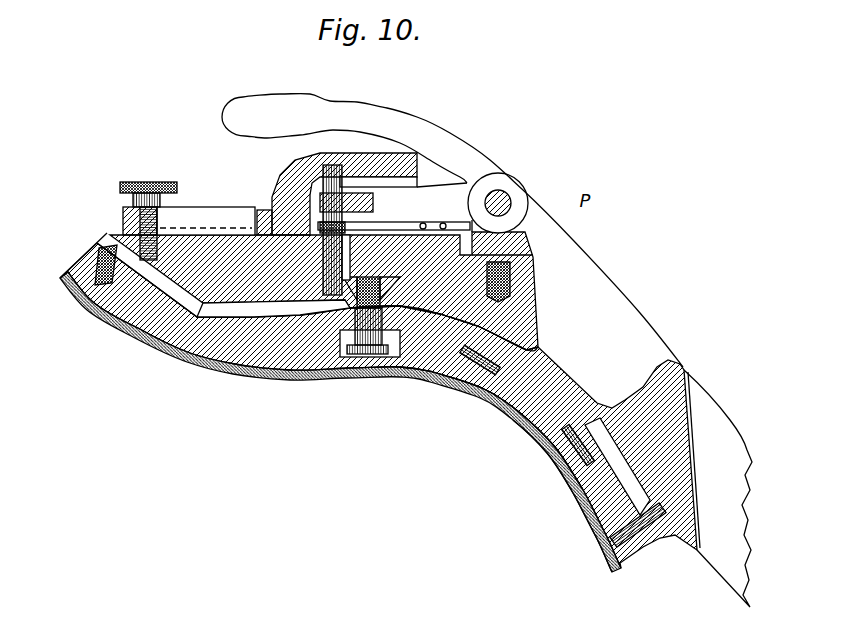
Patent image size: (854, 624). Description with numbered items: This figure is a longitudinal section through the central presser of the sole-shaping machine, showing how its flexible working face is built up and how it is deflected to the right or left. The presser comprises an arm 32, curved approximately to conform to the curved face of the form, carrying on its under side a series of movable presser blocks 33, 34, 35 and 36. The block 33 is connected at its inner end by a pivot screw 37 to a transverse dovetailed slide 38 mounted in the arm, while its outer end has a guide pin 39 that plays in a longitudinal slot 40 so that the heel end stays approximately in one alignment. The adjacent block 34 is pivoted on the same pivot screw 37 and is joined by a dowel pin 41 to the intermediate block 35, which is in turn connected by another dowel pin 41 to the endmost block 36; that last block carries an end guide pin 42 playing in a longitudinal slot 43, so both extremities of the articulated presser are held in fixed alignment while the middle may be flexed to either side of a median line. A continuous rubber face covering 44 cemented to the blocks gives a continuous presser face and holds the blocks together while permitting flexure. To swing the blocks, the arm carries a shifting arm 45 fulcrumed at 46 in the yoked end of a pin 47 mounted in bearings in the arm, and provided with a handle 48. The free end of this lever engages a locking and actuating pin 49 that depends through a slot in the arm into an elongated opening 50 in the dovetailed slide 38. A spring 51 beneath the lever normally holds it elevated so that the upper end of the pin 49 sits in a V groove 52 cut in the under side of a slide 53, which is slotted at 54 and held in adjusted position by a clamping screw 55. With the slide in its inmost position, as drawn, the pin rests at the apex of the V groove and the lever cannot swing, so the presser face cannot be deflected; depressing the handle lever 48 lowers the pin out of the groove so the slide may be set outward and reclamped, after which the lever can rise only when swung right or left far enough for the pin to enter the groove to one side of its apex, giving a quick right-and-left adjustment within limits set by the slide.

The arm 32 is at (638, 316).
The presser block 33 is at (232, 365).
The presser block 34 is at (445, 388).
The intermediate presser block 35 is at (530, 400).
The endmost presser block 36 is at (598, 497).
The pivot screw 37 is at (360, 375).
The dovetailed slide 38 is at (353, 290).
The guide pin 39 is at (105, 258).
The longitudinal slot 40 is at (112, 318).
The dowel pin 41 is at (540, 347).
The end guide pin 42 is at (643, 553).
The longitudinal slot 43 is at (645, 493).
The face covering 44 is at (152, 355).
The shifting arm 45 is at (442, 199).
The fulcrum 46 is at (500, 205).
The pin 47 is at (533, 260).
The handle 48 is at (345, 108).
The locking and actuating pin 49 is at (330, 200).
The elongated opening 50 is at (335, 305).
The spring 51 is at (378, 232).
The V groove 52 is at (418, 186).
The slide 53 is at (292, 167).
The slot 54 is at (190, 218).
The clamping screw 55 is at (142, 182).